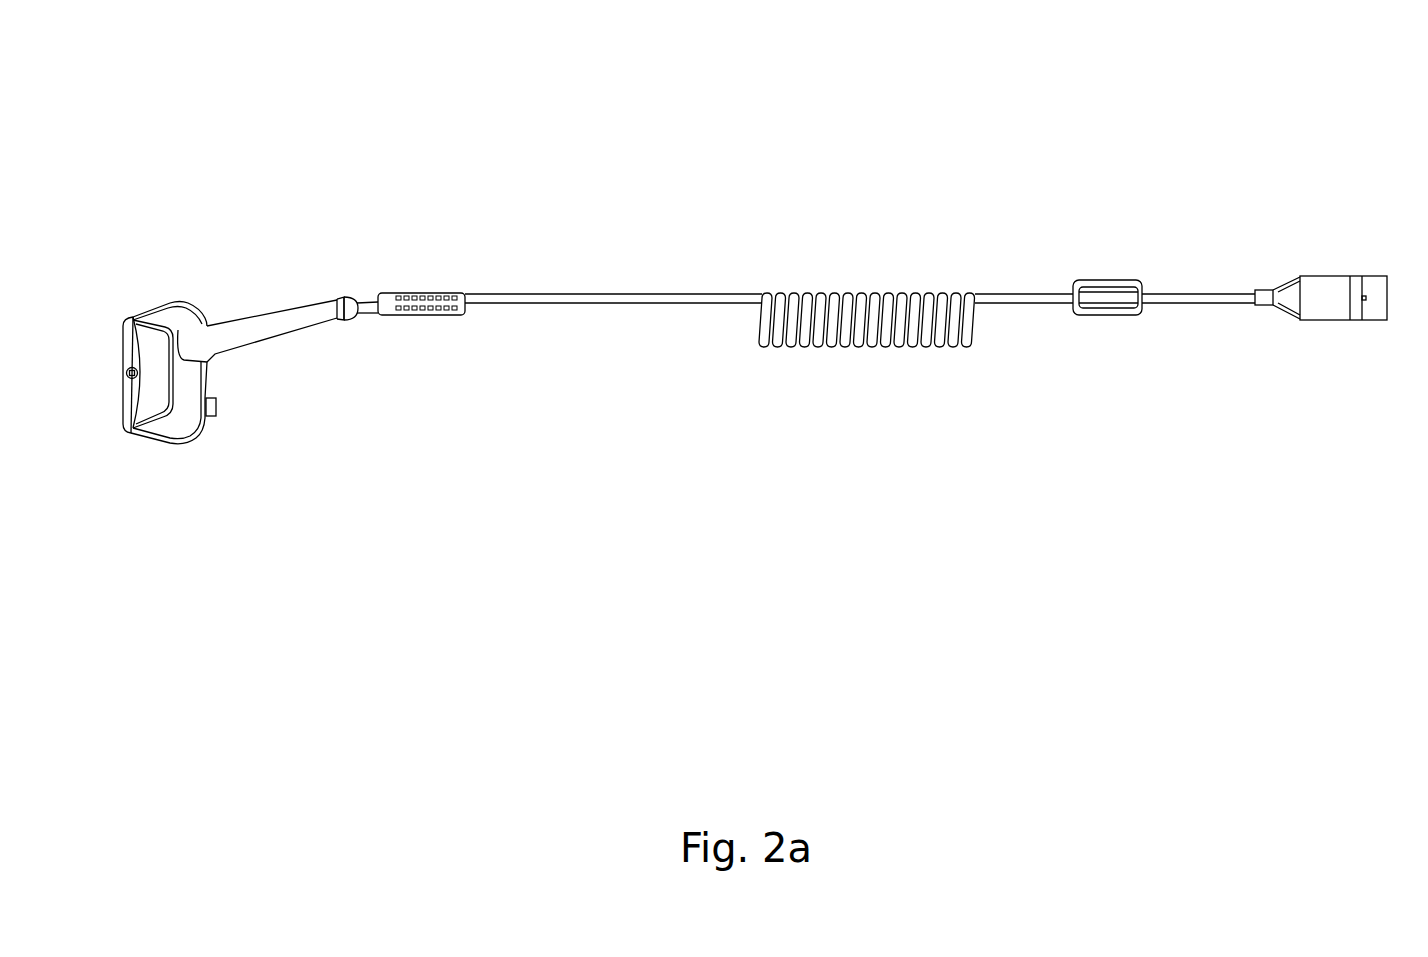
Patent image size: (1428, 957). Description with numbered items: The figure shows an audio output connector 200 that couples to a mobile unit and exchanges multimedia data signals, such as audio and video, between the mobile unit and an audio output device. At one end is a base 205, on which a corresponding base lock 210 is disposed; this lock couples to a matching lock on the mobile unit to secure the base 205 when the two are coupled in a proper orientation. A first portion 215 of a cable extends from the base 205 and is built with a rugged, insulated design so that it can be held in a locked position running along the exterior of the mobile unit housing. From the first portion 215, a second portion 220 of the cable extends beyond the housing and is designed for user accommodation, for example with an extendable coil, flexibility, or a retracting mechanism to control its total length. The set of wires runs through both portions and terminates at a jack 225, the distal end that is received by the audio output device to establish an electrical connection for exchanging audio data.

The audio output connector 200 is at (1257, 117).
The base 205 is at (183, 447).
The corresponding base lock 210 is at (131, 368).
The first portion of a cable 215 is at (257, 316).
The second portion of the cable 220 is at (857, 292).
The jack 225 is at (1330, 279).